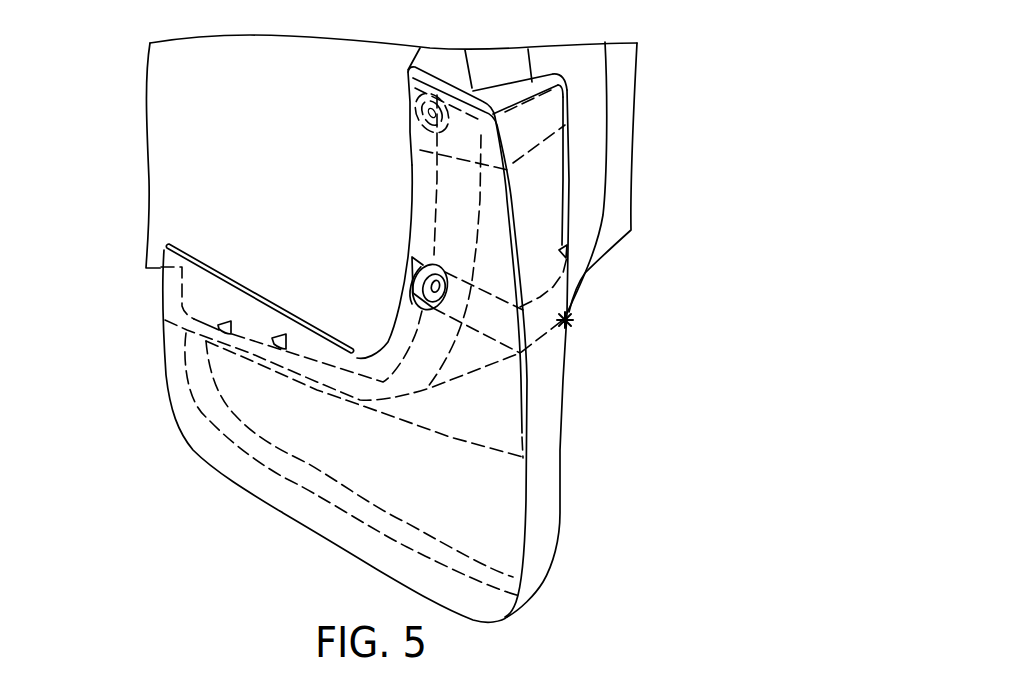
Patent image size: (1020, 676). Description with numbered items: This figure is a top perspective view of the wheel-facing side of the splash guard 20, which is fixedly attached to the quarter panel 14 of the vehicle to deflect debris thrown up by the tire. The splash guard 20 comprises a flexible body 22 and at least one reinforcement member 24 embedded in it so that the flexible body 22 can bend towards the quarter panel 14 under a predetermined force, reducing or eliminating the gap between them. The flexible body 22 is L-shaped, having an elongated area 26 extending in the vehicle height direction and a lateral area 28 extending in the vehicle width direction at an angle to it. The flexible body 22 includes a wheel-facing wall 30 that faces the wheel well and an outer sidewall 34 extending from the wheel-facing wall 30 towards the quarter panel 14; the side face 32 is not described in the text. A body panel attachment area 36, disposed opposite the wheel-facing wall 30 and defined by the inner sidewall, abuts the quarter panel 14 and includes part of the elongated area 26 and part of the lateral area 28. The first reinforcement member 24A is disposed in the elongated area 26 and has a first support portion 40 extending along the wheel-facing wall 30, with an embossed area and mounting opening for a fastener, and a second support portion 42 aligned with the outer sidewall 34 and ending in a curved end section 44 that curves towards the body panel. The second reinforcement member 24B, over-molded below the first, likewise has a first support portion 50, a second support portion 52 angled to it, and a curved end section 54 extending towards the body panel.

The quarter panel 14 is at (590, 133).
The splash guard 20 is at (296, 138).
The flexible body 22 is at (163, 387).
The reinforcement member 24 is at (389, 240).
The first reinforcement member 24A is at (546, 81).
The second reinforcement member 24B is at (576, 321).
The elongated area 26 is at (565, 367).
The lateral area 28 is at (237, 281).
The wheel-facing wall 30 is at (173, 300).
The side face 32 is at (543, 407).
The outer sidewall 34 is at (456, 88).
The body panel attachment area 36 is at (379, 376).
The first support portion 40 is at (437, 95).
The second support portion 42 is at (518, 95).
The curved end section 44 is at (555, 72).
The first support portion 50 is at (447, 268).
The second support portion 52 is at (553, 303).
The curved end section 54 is at (573, 242).